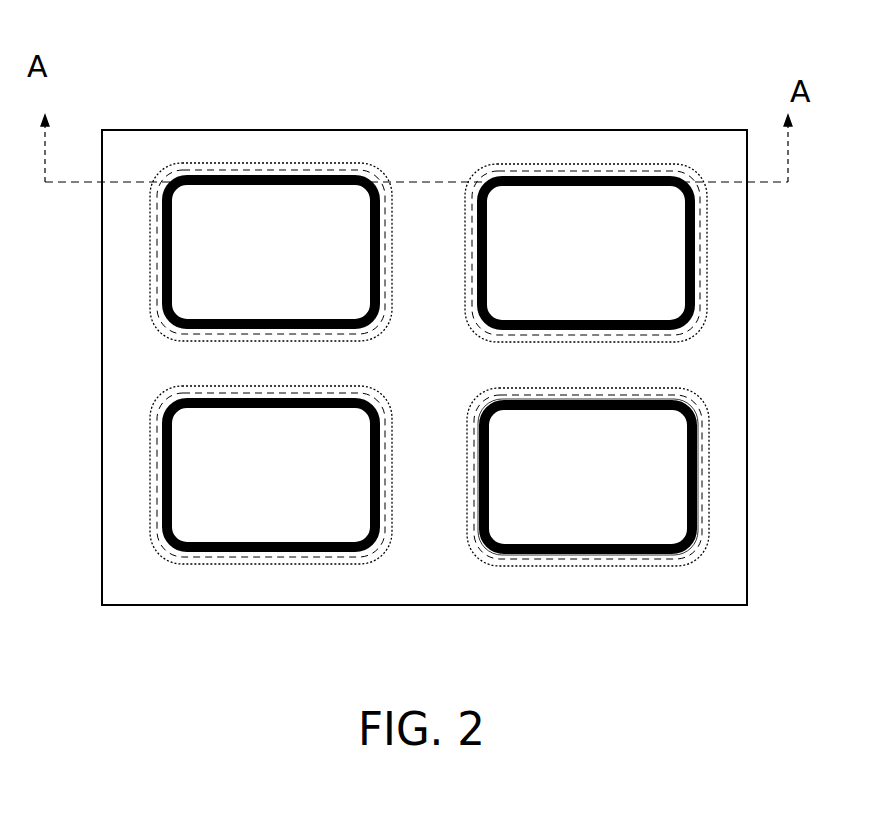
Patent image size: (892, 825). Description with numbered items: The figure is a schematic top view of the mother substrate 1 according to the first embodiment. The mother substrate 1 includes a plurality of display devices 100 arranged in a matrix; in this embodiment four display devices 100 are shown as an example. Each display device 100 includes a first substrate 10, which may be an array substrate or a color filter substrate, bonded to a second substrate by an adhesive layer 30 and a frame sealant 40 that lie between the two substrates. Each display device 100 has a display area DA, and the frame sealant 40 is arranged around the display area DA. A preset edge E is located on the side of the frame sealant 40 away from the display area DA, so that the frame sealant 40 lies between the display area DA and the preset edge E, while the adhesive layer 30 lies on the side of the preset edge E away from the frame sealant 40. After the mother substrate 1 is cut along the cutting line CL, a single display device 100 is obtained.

The mother substrate 1 is at (253, 90).
The first substrate 10 is at (708, 582).
The display device 100 is at (641, 383).
The adhesive layer 30 is at (697, 403).
The preset edge E is at (697, 438).
The frame sealant 40 is at (698, 470).
The display area DA is at (662, 527).
The cutting line CL is at (477, 558).